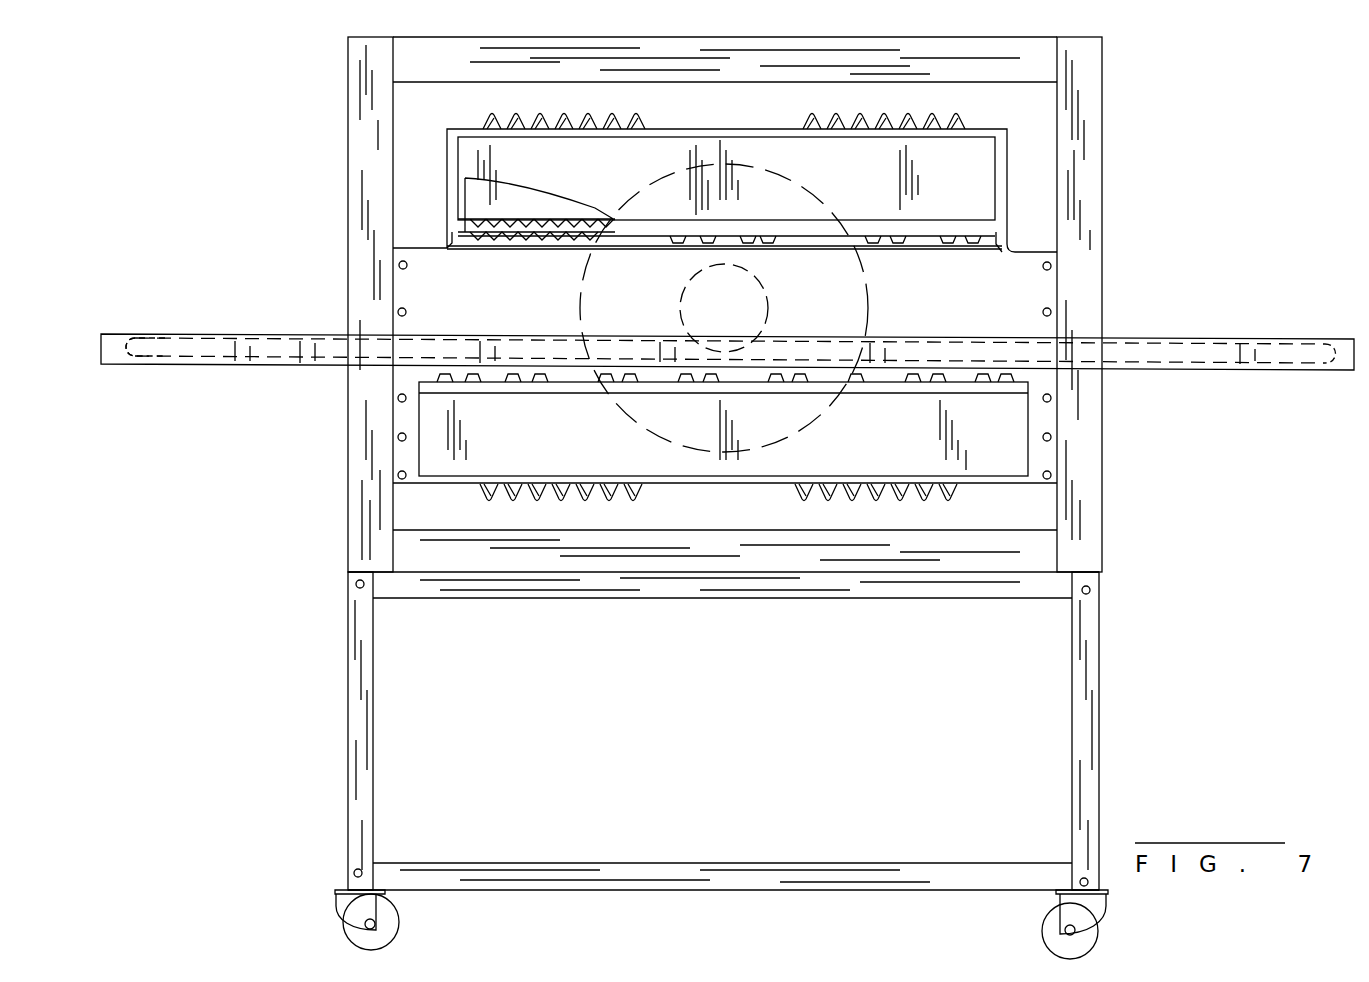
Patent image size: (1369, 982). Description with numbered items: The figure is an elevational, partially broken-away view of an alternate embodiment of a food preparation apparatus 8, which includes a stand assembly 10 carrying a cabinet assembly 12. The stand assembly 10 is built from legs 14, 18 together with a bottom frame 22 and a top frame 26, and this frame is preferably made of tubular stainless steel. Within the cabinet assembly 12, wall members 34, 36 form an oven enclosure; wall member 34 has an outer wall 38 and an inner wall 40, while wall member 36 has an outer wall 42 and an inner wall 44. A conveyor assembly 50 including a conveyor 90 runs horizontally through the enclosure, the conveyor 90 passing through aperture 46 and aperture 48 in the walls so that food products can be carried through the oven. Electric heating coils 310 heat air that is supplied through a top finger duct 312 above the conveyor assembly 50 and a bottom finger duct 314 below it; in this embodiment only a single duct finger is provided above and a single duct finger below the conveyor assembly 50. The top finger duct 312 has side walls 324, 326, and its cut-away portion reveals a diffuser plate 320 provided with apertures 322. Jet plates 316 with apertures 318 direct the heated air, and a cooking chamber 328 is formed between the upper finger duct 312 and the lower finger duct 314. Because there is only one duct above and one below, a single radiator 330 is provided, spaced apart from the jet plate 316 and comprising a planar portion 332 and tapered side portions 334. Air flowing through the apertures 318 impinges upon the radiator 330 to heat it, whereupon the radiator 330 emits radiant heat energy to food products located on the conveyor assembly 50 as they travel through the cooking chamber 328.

The food preparation apparatus 8 is at (725, 498).
The stand assembly 10 is at (333, 776).
The cabinet assembly 12 is at (321, 451).
The leg 14 is at (373, 656).
The leg 18 is at (1072, 660).
The bottom frame 22 is at (828, 864).
The top frame 26 is at (790, 598).
The wall member 34 is at (336, 412).
The wall member 36 is at (1112, 461).
The outer wall 38 is at (354, 538).
The inner wall 40 is at (393, 508).
The outer wall 42 is at (1104, 528).
The inner wall 44 is at (1057, 518).
The aperture 46 is at (390, 300).
The aperture 48 is at (1057, 303).
The conveyor assembly 50 is at (219, 312).
The conveyor 90 is at (150, 334).
The electric heating coils 310 is at (948, 118).
The top finger duct 312 is at (473, 144).
The bottom finger duct 314 is at (1010, 416).
The jet plate 316 is at (988, 246).
The apertures 318 is at (896, 242).
The diffuser plate 320 is at (526, 218).
The apertures 322 is at (594, 220).
The side wall 324 is at (994, 176).
The side wall 326 is at (460, 164).
The cooking chamber 328 is at (724, 306).
The radiator 330 is at (804, 256).
The planar portion 332 is at (642, 244).
The tapered side portions 334 is at (451, 247).